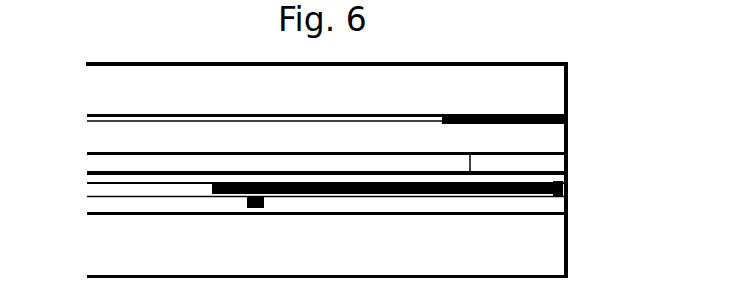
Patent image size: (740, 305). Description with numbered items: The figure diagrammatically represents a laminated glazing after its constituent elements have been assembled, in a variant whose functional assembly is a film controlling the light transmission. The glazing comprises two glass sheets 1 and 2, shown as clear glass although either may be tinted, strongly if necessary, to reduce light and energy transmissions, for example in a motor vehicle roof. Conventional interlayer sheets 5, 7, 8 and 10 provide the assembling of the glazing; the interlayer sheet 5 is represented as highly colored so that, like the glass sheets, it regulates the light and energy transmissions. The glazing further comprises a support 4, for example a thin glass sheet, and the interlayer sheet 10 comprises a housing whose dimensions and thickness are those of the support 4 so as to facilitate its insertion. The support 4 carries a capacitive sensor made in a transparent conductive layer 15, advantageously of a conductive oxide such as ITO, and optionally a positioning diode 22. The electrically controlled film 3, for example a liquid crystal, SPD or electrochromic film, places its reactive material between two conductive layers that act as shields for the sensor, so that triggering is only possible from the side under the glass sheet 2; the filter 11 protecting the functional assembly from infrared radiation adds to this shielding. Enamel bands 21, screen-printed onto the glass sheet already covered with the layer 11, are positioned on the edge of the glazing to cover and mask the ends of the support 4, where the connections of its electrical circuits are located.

The glass sheet 1 is at (382, 104).
The glass sheet 2 is at (390, 258).
The film controlling the light transmission 3 is at (97, 162).
The support 4 is at (568, 195).
The interlayer sheet 5 is at (568, 139).
The interlayer sheet 7 is at (568, 182).
The interlayer sheet 8 is at (104, 206).
The interlayer sheet 10 is at (553, 163).
The filter 11 is at (87, 118).
The transparent conductive layer 15 is at (525, 197).
The enamel band 21 is at (568, 113).
The positioning diode 22 is at (247, 204).